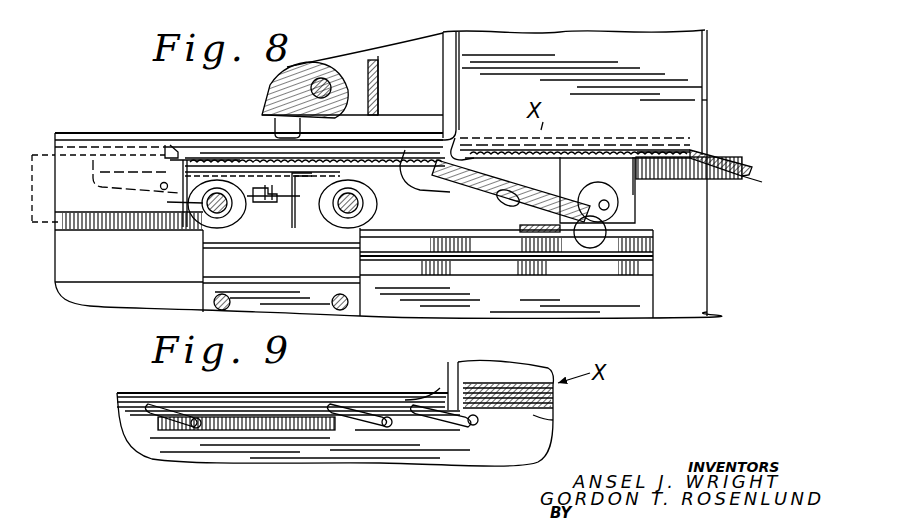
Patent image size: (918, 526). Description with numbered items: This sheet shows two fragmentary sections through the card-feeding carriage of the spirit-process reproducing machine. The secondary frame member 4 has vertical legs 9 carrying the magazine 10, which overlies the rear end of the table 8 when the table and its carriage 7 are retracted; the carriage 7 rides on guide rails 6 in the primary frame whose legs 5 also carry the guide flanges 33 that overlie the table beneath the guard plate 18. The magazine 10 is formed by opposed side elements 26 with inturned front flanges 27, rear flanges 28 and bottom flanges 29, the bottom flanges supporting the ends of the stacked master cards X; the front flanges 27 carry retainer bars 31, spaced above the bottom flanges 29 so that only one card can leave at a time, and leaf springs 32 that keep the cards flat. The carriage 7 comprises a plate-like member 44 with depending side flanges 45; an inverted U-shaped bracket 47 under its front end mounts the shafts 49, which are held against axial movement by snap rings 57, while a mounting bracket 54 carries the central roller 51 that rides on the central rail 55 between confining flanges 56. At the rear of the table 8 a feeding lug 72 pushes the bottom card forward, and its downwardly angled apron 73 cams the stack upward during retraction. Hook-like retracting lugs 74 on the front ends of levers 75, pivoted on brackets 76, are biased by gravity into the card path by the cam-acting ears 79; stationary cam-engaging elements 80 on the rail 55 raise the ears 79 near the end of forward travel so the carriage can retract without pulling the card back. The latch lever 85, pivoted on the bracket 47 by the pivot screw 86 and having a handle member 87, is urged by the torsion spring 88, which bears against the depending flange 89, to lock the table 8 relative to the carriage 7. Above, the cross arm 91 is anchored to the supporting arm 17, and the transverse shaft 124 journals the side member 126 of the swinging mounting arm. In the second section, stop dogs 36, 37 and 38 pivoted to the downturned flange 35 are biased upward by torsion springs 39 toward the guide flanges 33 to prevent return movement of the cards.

In FIG. 8, the secondary frame member 4 is at (696, 300).
In FIG. 8, the legs of primary frame member 5 is at (73, 303).
In FIG. 9, the legs of primary frame member 5 is at (172, 458).
In FIG. 8, the guide rails 6 is at (112, 226).
In FIG. 8, the carriage 7 is at (637, 196).
In FIG. 8, the table 8 is at (676, 152).
In FIG. 8, the legs of secondary frame member 9 is at (693, 266).
In FIG. 8, the magazine 10 is at (711, 43).
In FIG. 9, the magazine 10 is at (503, 368).
In FIG. 8, the supporting arm 17 is at (413, 58).
In FIG. 9, the guard plate 18 is at (215, 393).
In FIG. 8, the side elements 26 is at (618, 47).
In FIG. 9, the side elements 26 is at (487, 372).
In FIG. 8, the front flanges 27 is at (460, 58).
In FIG. 9, the front flanges 27 is at (467, 358).
In FIG. 8, the rear flanges 28 is at (708, 70).
In FIG. 9, the bottom flanges 29 is at (550, 422).
In FIG. 9, the retainer bars 31 is at (448, 388).
In FIG. 8, the leaf springs 32 is at (385, 143).
In FIG. 8, the guide flanges 33 is at (203, 140).
In FIG. 9, the guide flanges 33 is at (262, 398).
In FIG. 9, the downturned flange 35 is at (284, 428).
In FIG. 9, the stop dog 36 is at (427, 417).
In FIG. 8, the stop dog 37 is at (353, 134).
In FIG. 9, the stop dog 37 is at (338, 413).
In FIG. 8, the stop dog 38 is at (165, 147).
In FIG. 9, the stop dog 38 is at (155, 412).
In FIG. 9, the torsion springs 39 is at (175, 412).
In FIG. 8, the plate-like member 44 is at (563, 155).
In FIG. 8, the depending side flanges 45 is at (608, 157).
In FIG. 8, the U-shaped bracket 47 is at (237, 158).
In FIG. 8, the shafts 49 is at (373, 205).
In FIG. 8, the central roller 51 is at (637, 215).
In FIG. 8, the mounting bracket 54 is at (500, 204).
In FIG. 8, the central track 55 is at (624, 319).
In FIG. 8, the confining flanges 56 is at (655, 243).
In FIG. 8, the snap rings 57 is at (173, 203).
In FIG. 8, the feeding lug 72 is at (708, 152).
In FIG. 8, the apron 73 is at (753, 167).
In FIG. 8, the retracting lugs 74 is at (104, 138).
In FIG. 8, the levers 75 is at (477, 183).
In FIG. 8, the brackets 76 is at (520, 210).
In FIG. 8, the cam-acting ears 79 is at (584, 247).
In FIG. 8, the cam-engaging elements 80 is at (322, 237).
In FIG. 8, the latch lever 85 is at (400, 176).
In FIG. 8, the pivot screw 86 is at (262, 203).
In FIG. 8, the handle member 87 is at (288, 228).
In FIG. 8, the torsion spring 88 is at (190, 153).
In FIG. 8, the depending flange 89 is at (208, 212).
In FIG. 8, the cross arm 91 is at (377, 60).
In FIG. 8, the transverse shaft 124 is at (322, 82).
In FIG. 8, the side member 126 is at (288, 82).